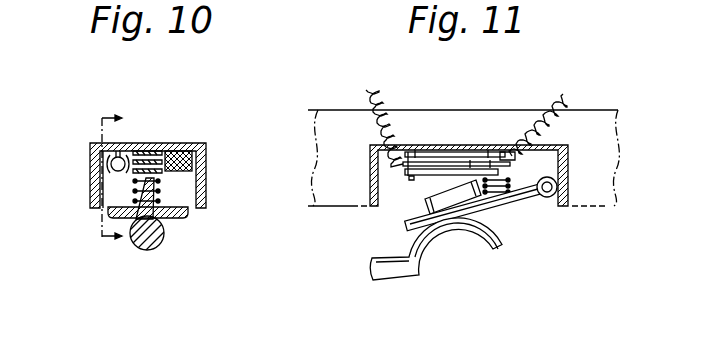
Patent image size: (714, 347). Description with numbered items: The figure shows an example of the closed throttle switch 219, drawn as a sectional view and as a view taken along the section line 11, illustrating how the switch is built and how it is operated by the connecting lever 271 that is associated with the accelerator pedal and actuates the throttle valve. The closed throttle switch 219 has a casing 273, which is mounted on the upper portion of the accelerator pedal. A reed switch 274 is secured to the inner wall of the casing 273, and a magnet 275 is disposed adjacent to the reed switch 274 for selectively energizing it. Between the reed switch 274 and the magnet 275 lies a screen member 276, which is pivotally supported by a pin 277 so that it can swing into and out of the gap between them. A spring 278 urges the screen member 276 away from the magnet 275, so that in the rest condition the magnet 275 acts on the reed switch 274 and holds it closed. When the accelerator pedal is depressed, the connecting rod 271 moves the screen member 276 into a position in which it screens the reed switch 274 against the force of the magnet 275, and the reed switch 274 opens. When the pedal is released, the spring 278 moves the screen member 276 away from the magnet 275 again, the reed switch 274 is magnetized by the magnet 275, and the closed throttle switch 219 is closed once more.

In FIG. 10, the section line 11- 11 is at (119, 178).
In FIG. 10, the closed throttle switch 219 is at (88, 167).
In FIG. 10, the connecting lever 271 is at (139, 248).
In FIG. 11, the connecting lever 271 is at (410, 273).
In FIG. 10, the casing 273 is at (207, 173).
In FIG. 10, the reed switch 274 is at (133, 143).
In FIG. 10, the magnet 275 is at (195, 144).
In FIG. 10, the screen member 276 is at (188, 216).
In FIG. 11, the screen member 276 is at (423, 203).
In FIG. 11, the pin 277 is at (548, 197).
In FIG. 10, the spring 278 is at (152, 182).